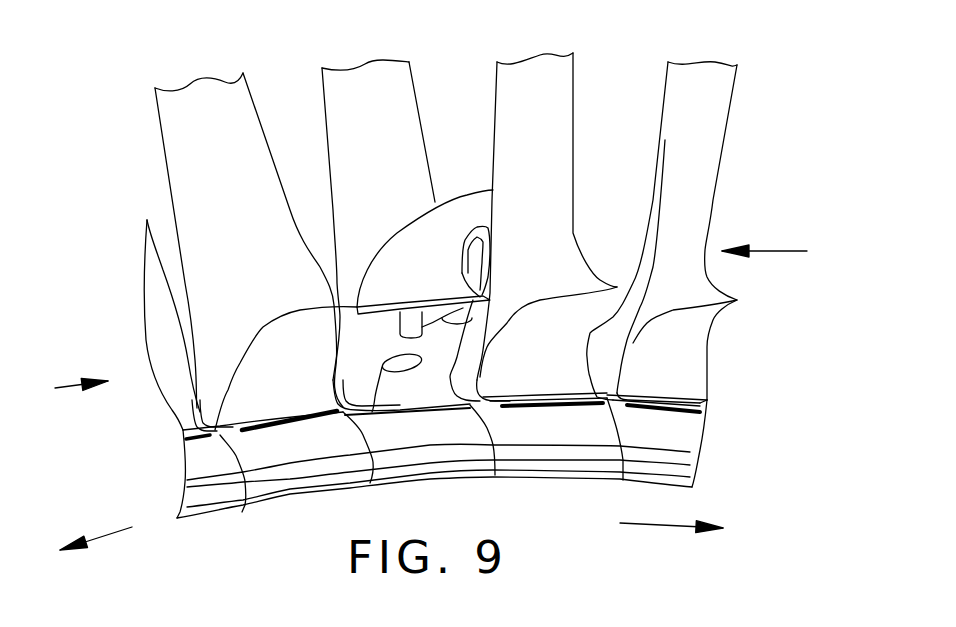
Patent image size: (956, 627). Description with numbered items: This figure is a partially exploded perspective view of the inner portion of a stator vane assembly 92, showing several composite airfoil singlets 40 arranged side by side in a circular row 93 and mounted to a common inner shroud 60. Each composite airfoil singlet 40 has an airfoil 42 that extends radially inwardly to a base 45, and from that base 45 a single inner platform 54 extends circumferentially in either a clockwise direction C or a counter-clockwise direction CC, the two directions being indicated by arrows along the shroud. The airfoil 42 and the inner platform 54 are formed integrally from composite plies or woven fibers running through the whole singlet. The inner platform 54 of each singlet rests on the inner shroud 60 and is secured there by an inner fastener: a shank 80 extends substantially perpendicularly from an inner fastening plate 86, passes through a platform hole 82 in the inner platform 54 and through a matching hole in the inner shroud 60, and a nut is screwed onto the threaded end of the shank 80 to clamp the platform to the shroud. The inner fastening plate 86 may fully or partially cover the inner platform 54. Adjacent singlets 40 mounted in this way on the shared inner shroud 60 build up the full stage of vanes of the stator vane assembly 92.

The composite airfoil singlet 40 is at (280, 520).
The airfoil 42 is at (377, 88).
The base 45 is at (372, 420).
The inner platform 54 is at (407, 387).
The inner shroud 60 is at (697, 437).
The shank 80 is at (393, 323).
The platform hole 82 is at (410, 362).
The inner fastening plate 86 is at (432, 255).
The stator vane assembly 92 is at (60, 385).
The circular row 93 is at (775, 250).
The counter-clockwise direction CC is at (105, 530).
The clockwise direction C is at (653, 525).